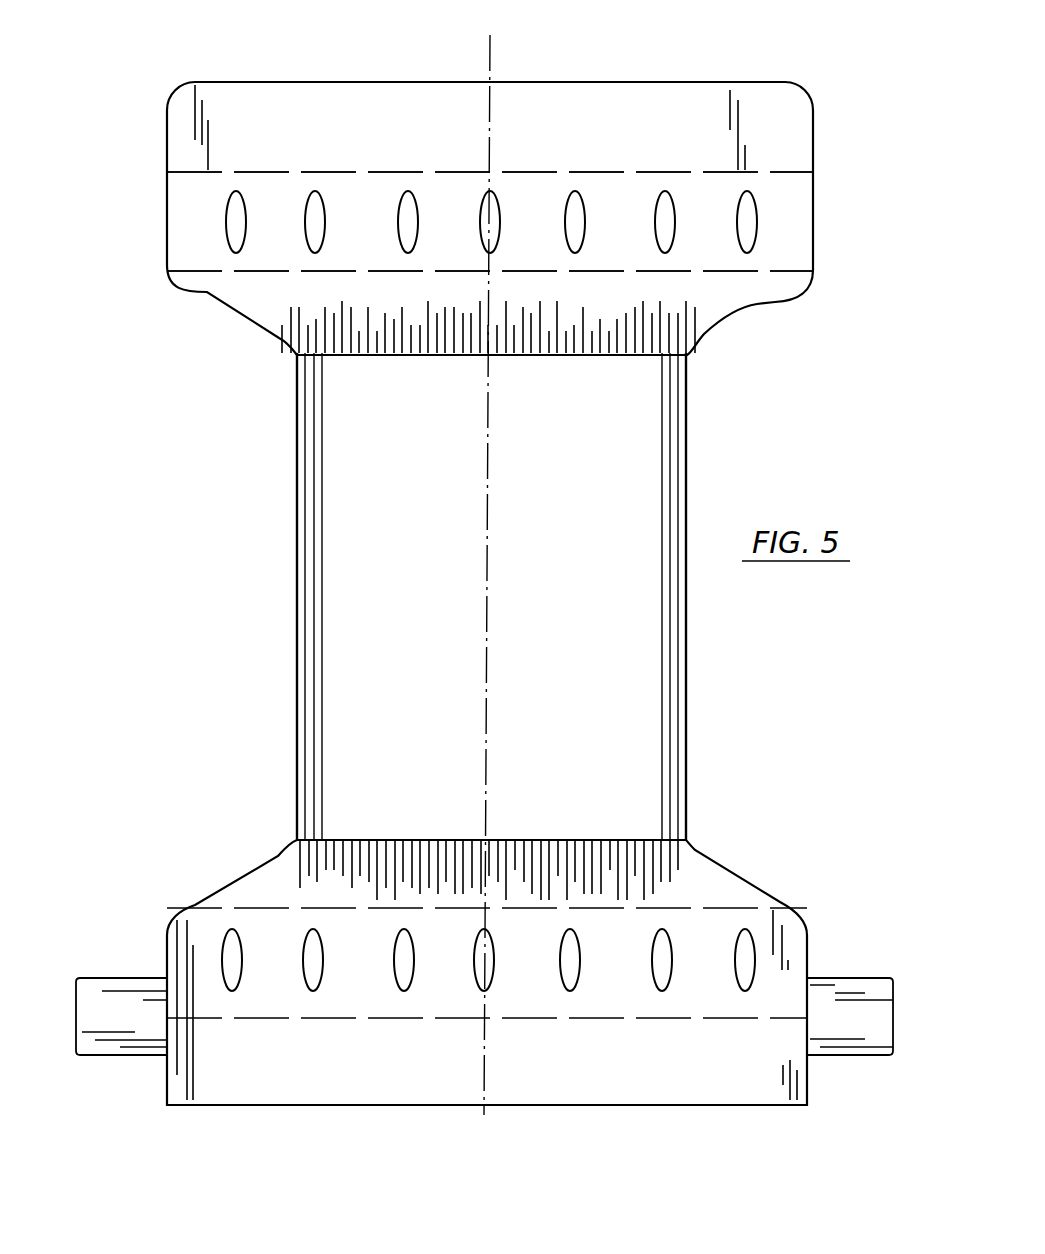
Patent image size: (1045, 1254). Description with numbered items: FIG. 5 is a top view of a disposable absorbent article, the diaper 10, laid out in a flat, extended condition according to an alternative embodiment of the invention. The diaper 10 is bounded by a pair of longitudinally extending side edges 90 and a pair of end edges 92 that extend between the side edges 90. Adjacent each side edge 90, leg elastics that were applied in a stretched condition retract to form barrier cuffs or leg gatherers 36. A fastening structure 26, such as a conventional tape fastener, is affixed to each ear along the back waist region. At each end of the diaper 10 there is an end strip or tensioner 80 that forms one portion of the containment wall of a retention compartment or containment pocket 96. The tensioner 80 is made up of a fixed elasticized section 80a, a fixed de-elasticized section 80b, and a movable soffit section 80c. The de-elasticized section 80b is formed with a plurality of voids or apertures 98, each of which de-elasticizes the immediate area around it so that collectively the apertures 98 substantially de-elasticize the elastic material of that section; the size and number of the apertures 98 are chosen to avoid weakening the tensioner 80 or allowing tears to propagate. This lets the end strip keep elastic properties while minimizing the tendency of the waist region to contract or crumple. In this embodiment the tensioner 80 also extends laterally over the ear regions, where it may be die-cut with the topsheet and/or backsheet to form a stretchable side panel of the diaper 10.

The diaper 10 is at (700, 638).
The fastening structure 26 is at (120, 1045).
The leg gatherers 36 is at (310, 473).
The tensioner 80 is at (788, 248).
The fixed elasticized section 80a is at (580, 135).
The fixed de-elasticized section 80b is at (560, 236).
The movable soffit section 80c is at (648, 322).
The side edges 90 is at (293, 692).
The end edges 92 is at (293, 81).
The containment pocket 96 is at (536, 586).
The apertures 98 is at (665, 228).